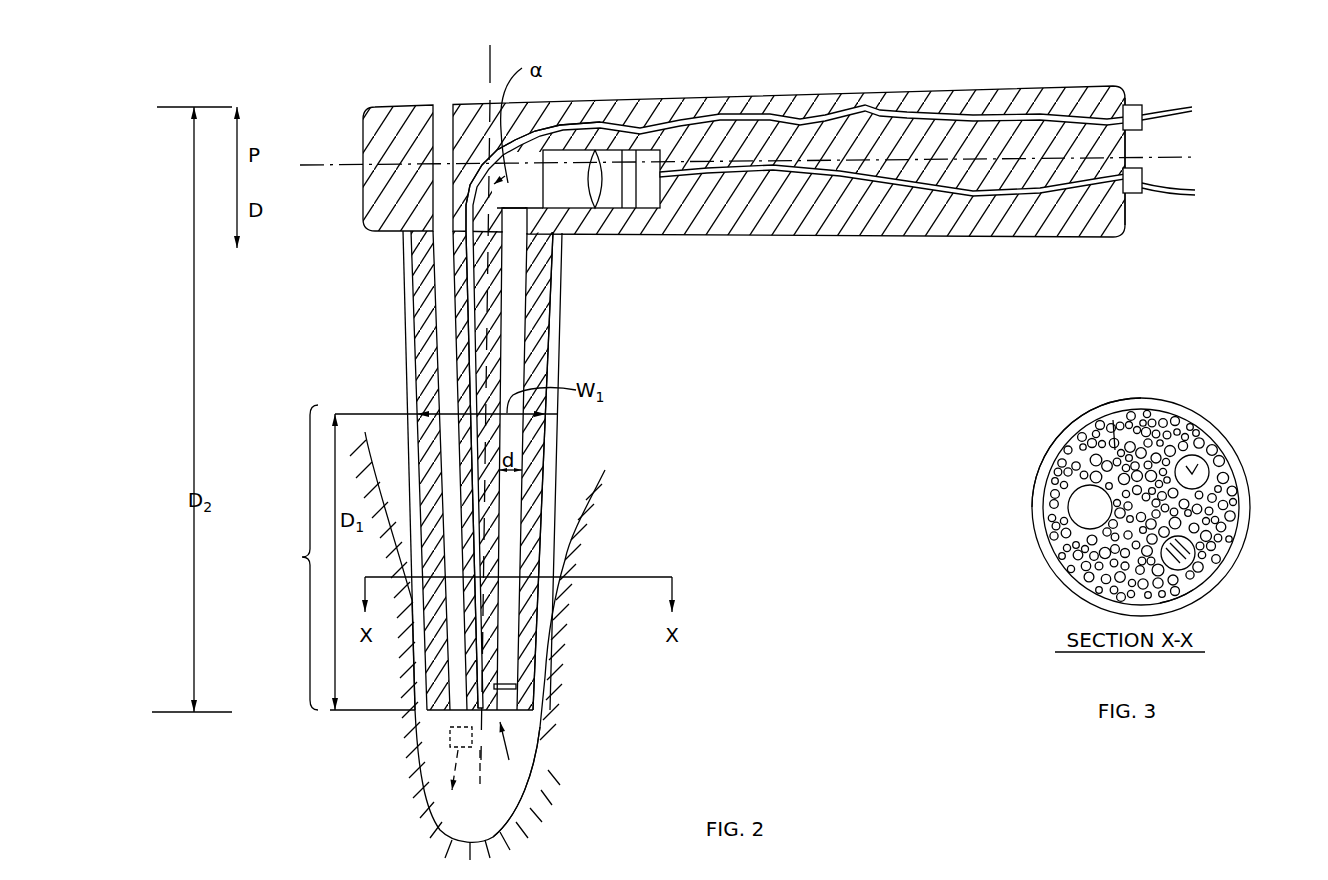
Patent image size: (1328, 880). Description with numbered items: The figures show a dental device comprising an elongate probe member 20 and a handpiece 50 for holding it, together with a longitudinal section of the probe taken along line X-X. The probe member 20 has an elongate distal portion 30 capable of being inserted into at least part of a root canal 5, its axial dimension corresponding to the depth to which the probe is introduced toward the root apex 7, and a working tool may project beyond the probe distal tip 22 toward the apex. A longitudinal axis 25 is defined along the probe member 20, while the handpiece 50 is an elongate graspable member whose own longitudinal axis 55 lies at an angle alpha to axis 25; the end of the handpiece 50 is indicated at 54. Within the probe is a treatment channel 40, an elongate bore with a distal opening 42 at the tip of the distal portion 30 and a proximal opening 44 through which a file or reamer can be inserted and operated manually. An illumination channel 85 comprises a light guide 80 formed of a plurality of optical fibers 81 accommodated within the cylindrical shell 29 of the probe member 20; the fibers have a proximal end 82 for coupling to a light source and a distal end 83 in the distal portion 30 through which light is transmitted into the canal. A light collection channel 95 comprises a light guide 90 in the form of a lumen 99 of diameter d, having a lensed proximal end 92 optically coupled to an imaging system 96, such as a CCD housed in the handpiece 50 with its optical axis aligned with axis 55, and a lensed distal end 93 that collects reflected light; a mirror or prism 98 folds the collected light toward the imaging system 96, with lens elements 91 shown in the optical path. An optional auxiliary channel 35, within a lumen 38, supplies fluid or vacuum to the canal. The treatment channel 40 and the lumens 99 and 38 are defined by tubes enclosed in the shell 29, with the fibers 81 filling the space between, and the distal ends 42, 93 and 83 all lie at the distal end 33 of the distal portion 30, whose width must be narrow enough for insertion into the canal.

In FIG. 2, the root canal 5 is at (537, 677).
In FIG. 2, the root apex 7 is at (500, 805).
In FIG. 2, the probe member 20 is at (403, 258).
In FIG. 2, the probe distal tip 22 is at (523, 697).
In FIG. 2, the longitudinal axis 25 is at (489, 70).
In FIG. 2, the shell 29 is at (563, 282).
In FIG. 3, the shell 29 is at (1241, 463).
In FIG. 2, the distal portion 30 is at (435, 632).
In FIG. 2, the distal end 33 is at (416, 720).
In FIG. 3, the auxiliary channel 35 is at (1239, 494).
In FIG. 3, the lumen 38 is at (1196, 468).
In FIG. 2, the treatment channel 40 is at (440, 300).
In FIG. 3, the treatment channel 40 is at (1086, 513).
In FIG. 2, the distal opening 42 is at (448, 738).
In FIG. 2, the proximal opening 44 is at (440, 120).
In FIG. 2, the handpiece 50 is at (765, 95).
In FIG. 2, the proximal end of handle 54 is at (1124, 238).
In FIG. 2, the longitudinal axis of handpiece 55 is at (345, 161).
In FIG. 3, the light guide 80 is at (1150, 447).
In FIG. 2, the optical fibers 81 is at (478, 307).
In FIG. 3, the optical fibers 81 is at (1113, 420).
In FIG. 2, the proximal end 82 is at (1134, 105).
In FIG. 2, the distal end 83 is at (530, 782).
In FIG. 3, the distal end 83 is at (1202, 446).
In FIG. 2, the illumination channel 85 is at (472, 301).
In FIG. 3, the illumination channel 85 is at (1031, 446).
In FIG. 2, the light guide 90 is at (510, 556).
In FIG. 3, the light guide 90 is at (1180, 558).
In FIG. 2, the lens assembly 91 is at (621, 185).
In FIG. 2, the proximal end 92 is at (1142, 192).
In FIG. 2, the distal end 93 is at (520, 750).
In FIG. 3, the light collection channel 95 is at (1200, 588).
In FIG. 2, the imaging system 96 is at (660, 180).
In FIG. 2, the mirror or prism 98 is at (500, 207).
In FIG. 2, the lumen 99 is at (547, 505).
In FIG. 3, the lumen 99 is at (1186, 550).